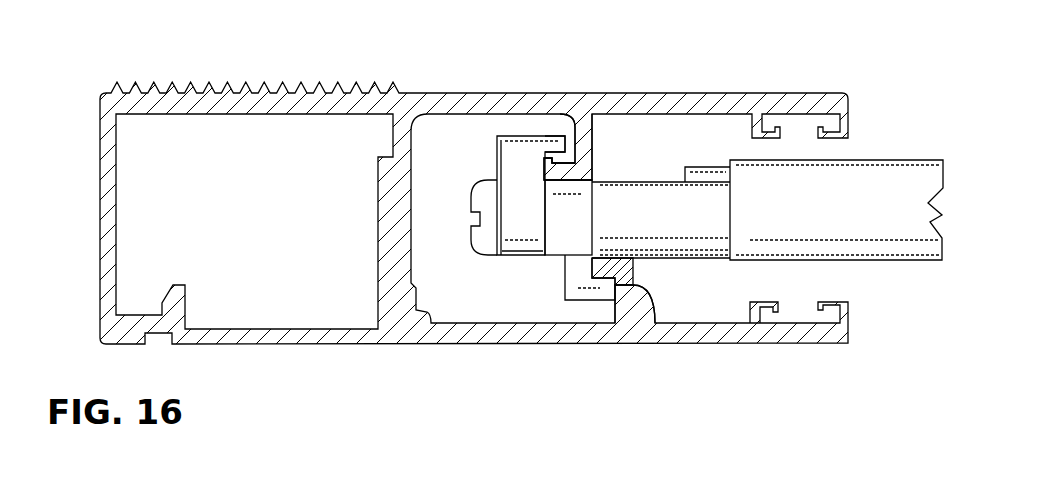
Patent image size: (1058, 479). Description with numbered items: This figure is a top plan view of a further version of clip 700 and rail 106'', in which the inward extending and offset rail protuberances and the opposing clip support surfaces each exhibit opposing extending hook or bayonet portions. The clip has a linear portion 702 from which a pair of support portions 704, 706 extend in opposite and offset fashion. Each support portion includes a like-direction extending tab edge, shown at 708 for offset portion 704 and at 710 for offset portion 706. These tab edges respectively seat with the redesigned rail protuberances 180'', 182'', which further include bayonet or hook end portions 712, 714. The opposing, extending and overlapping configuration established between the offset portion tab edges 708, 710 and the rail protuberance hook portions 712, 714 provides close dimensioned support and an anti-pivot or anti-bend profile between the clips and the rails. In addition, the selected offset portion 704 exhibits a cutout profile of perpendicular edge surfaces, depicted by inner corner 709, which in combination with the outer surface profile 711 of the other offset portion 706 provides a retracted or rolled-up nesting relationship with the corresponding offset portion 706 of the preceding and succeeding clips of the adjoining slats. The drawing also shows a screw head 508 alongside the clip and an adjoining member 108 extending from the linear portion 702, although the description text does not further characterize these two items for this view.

The rail 106'' is at (529, 213).
The rail protuberance 180'' is at (594, 112).
The rail protuberance 182'' is at (669, 333).
The clip 700 is at (681, 264).
The linear portion 702 is at (640, 198).
The support portion 704 is at (565, 256).
The support portion 706 is at (510, 158).
The tab edge 708 is at (598, 290).
The inner corner 709 is at (557, 242).
The tab edge 710 is at (548, 140).
The outer surface profile 711 is at (512, 137).
The hook end portion 712 is at (552, 172).
The hook end portion 714 is at (565, 302).
The screw head 508 is at (473, 236).
The rail 108 is at (892, 248).